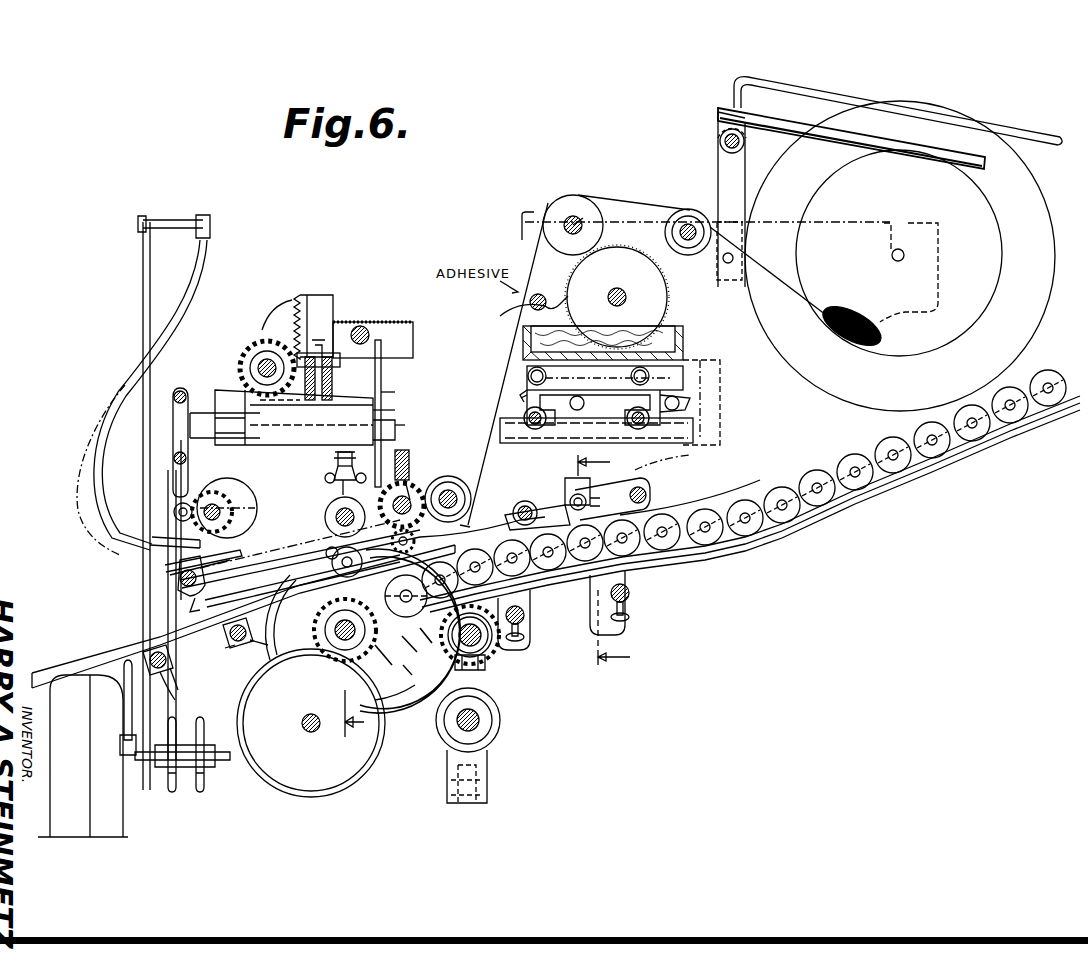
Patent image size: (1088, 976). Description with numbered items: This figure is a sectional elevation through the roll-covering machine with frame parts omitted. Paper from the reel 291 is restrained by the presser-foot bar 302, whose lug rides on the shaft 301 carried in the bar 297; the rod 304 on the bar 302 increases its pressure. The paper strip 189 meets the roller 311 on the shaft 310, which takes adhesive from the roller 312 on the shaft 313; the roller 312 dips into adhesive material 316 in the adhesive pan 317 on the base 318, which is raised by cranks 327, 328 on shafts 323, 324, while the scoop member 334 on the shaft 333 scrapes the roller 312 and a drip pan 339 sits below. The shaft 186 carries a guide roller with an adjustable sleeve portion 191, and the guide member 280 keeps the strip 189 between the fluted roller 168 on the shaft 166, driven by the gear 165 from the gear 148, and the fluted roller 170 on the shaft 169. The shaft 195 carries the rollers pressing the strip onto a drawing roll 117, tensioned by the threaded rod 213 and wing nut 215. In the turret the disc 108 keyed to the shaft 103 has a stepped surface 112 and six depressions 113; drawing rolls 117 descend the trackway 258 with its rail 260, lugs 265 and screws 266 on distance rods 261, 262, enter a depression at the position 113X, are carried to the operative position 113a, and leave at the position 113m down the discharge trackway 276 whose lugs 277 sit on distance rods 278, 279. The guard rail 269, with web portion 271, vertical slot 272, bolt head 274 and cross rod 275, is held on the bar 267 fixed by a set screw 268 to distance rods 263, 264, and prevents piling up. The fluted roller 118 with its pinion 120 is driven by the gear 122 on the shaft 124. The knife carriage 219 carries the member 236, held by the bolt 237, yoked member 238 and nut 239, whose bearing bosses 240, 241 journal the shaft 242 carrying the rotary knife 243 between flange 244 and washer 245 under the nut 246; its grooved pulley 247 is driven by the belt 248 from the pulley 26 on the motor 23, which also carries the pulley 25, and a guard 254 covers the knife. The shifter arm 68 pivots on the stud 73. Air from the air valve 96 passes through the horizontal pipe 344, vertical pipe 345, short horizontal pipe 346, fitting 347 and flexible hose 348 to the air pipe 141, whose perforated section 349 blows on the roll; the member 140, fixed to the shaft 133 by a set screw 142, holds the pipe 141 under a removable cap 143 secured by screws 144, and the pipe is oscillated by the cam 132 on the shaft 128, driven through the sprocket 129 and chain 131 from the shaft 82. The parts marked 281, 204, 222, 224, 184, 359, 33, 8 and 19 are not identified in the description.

The reel 291 is at (1030, 190).
The shaft 301 is at (722, 142).
The bar 297 is at (718, 180).
The presser-foot bar 302 is at (886, 130).
The rod 304 is at (1010, 118).
The shaft 310 is at (568, 205).
The roller 311 is at (578, 200).
The guide roller 281 is at (682, 240).
The roller 312 is at (660, 296).
The shaft 313 is at (620, 290).
The shaft 333 is at (548, 290).
The scoop member 334 is at (523, 306).
The adhesive material 316 is at (676, 315).
The adhesive pan 317 is at (680, 338).
The supporting member 318 is at (616, 378).
The crank 327 is at (628, 399).
The shaft 323 is at (545, 421).
The shaft 324 is at (646, 424).
The drip pan 339 is at (695, 431).
The crank 328 is at (513, 384).
The paper strip 189 is at (527, 392).
The vertical pipe 345 is at (143, 289).
The horizontal pipe 346 is at (178, 222).
The fitting 347 is at (210, 226).
The flexible hose 348 is at (190, 292).
The sub-frame 219 is at (315, 295).
The nut 239 is at (314, 340).
The head block 204 is at (370, 322).
The guard 254 is at (410, 322).
The yoked member 238 is at (345, 360).
The member 236 is at (335, 395).
The gear 222 is at (266, 360).
The gear 224 is at (245, 355).
The bearing boss 240 is at (222, 420).
The bolt 237 is at (275, 398).
The bearing boss 241 is at (311, 416).
The shaft 242 is at (258, 434).
The rotary knife 243 is at (382, 377).
The flange 244 is at (404, 390).
The washer 245 is at (395, 410).
The nut 246 is at (417, 423).
The grooved pulley 247 is at (165, 400).
The threaded rod 213 is at (337, 455).
The wing nut 215 is at (334, 470).
The shaft 195 is at (338, 505).
The fluted roller 168 is at (405, 500).
The gear 165 is at (440, 480).
The shaft 166 is at (454, 494).
The block 184 is at (422, 459).
The shaft 186 is at (465, 493).
The guide member 280 is at (482, 511).
The shaft 169 is at (392, 540).
The gear 148 is at (414, 540).
The fluted roller 170 is at (350, 584).
The shaft 128 is at (185, 502).
The cam 132 is at (230, 478).
The sprocket 129 is at (225, 505).
The chain 131 is at (250, 512).
The screw 144 is at (300, 542).
The operative position 113a is at (332, 548).
The discharge position 113m is at (262, 560).
The roller 359 is at (331, 557).
The removable cap 143 is at (160, 538).
The member 140 is at (170, 577).
The set screw 142 is at (180, 595).
The air pipe 141 is at (211, 569).
The shaft 133 is at (205, 590).
The shaft 103 is at (318, 630).
The perforated section 349 is at (320, 625).
The depressions 113 is at (400, 690).
The disc 108 is at (423, 675).
The pinion 120 is at (385, 660).
The entry position 113X is at (412, 640).
The fluted roller 118 is at (395, 707).
The section line 8 is at (354, 715).
The gear 122 is at (245, 710).
The shaft 124 is at (305, 732).
The air valve 96 is at (465, 612).
The shaft 82 is at (487, 650).
The roller 33 is at (480, 718).
The shifter arm 68 is at (480, 753).
The stud 73 is at (468, 802).
The motor 23 is at (115, 812).
The discharge trackway 276 is at (82, 690).
The lugs 277 is at (145, 652).
The distance rod 279 is at (225, 644).
The belt 248 is at (180, 692).
The distance rod 278 is at (178, 706).
The surface 112 is at (262, 652).
The grooved pulley 26 is at (158, 735).
The grooved pulley 25 is at (204, 727).
The horizontal pipe 344 is at (204, 785).
The drawing rolls 117 is at (740, 515).
The rail 260 is at (760, 545).
The trackway 258 is at (862, 507).
The distance rod 264 is at (528, 500).
The vertical slot 272 is at (537, 513).
The web portion 271 is at (565, 482).
The cross rod 275 is at (570, 495).
The head 274 is at (609, 503).
The bar 267 is at (605, 488).
The distance rod 263 is at (645, 485).
The set screw 268 is at (680, 459).
The guard rail 269 is at (660, 502).
The lugs 265 is at (532, 588).
The distance rod 261 is at (525, 611).
The distance rod 262 is at (630, 594).
The screws 266 is at (525, 637).
The section line 19 is at (613, 559).
The sleeve portion 191 is at (485, 490).